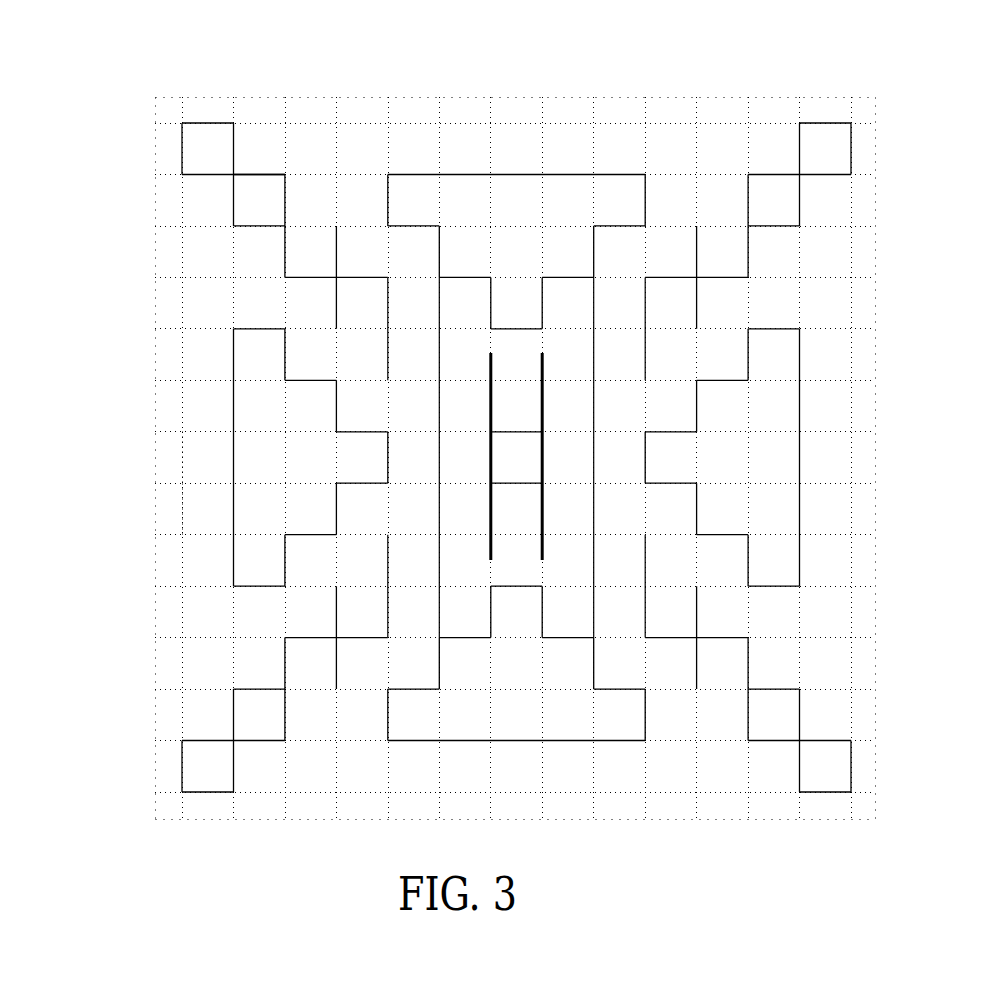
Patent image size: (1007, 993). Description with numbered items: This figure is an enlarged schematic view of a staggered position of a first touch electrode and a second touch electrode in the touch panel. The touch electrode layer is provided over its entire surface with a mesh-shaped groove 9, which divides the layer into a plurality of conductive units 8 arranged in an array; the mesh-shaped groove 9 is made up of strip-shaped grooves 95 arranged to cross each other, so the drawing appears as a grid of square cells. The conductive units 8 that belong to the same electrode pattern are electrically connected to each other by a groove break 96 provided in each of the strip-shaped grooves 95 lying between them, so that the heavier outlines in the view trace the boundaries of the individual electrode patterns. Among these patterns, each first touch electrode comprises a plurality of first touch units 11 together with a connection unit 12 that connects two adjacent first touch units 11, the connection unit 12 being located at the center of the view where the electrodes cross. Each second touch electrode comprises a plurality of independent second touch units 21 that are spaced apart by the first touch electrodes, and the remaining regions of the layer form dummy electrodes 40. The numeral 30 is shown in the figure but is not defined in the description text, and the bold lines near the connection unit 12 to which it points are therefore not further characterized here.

The conductive unit 8 is at (773, 200).
The mesh-shaped groove 9 is at (181, 404).
The first touch unit 11 is at (285, 250).
The connection unit 12 is at (516, 465).
The second touch unit 21 is at (262, 176).
The thick center lines 30 is at (490, 549).
The dummy electrode 40 is at (620, 197).
The strip-shaped groove 95 is at (180, 527).
The groove break 96 is at (180, 457).